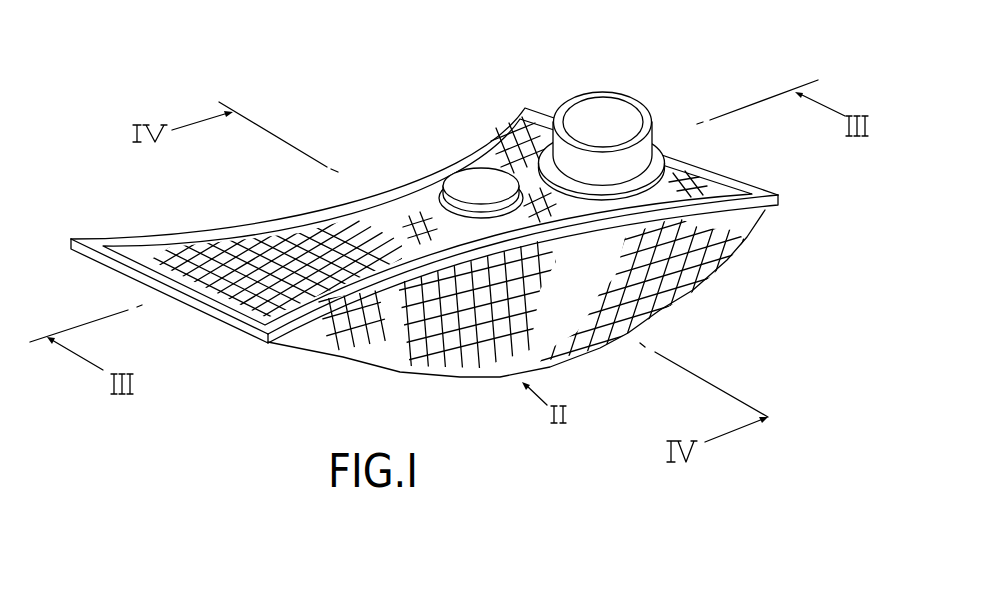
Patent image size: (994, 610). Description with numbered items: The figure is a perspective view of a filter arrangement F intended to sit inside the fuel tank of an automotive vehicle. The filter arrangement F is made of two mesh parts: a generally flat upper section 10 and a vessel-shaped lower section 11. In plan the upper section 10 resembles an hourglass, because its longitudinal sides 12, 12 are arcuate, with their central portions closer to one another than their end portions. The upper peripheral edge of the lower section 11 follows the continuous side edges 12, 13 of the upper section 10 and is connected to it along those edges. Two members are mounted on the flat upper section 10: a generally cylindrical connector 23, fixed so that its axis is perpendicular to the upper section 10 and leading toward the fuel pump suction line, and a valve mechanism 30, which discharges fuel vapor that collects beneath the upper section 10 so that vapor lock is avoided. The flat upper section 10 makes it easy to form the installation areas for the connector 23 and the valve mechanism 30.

The upper section 10 is at (370, 213).
The lower section 11 is at (350, 358).
The longitudinal side 12 is at (266, 220).
The side edge 13 is at (198, 308).
The connector 23 is at (627, 112).
The valve mechanism 30 is at (480, 180).
The filter arrangement F is at (580, 63).